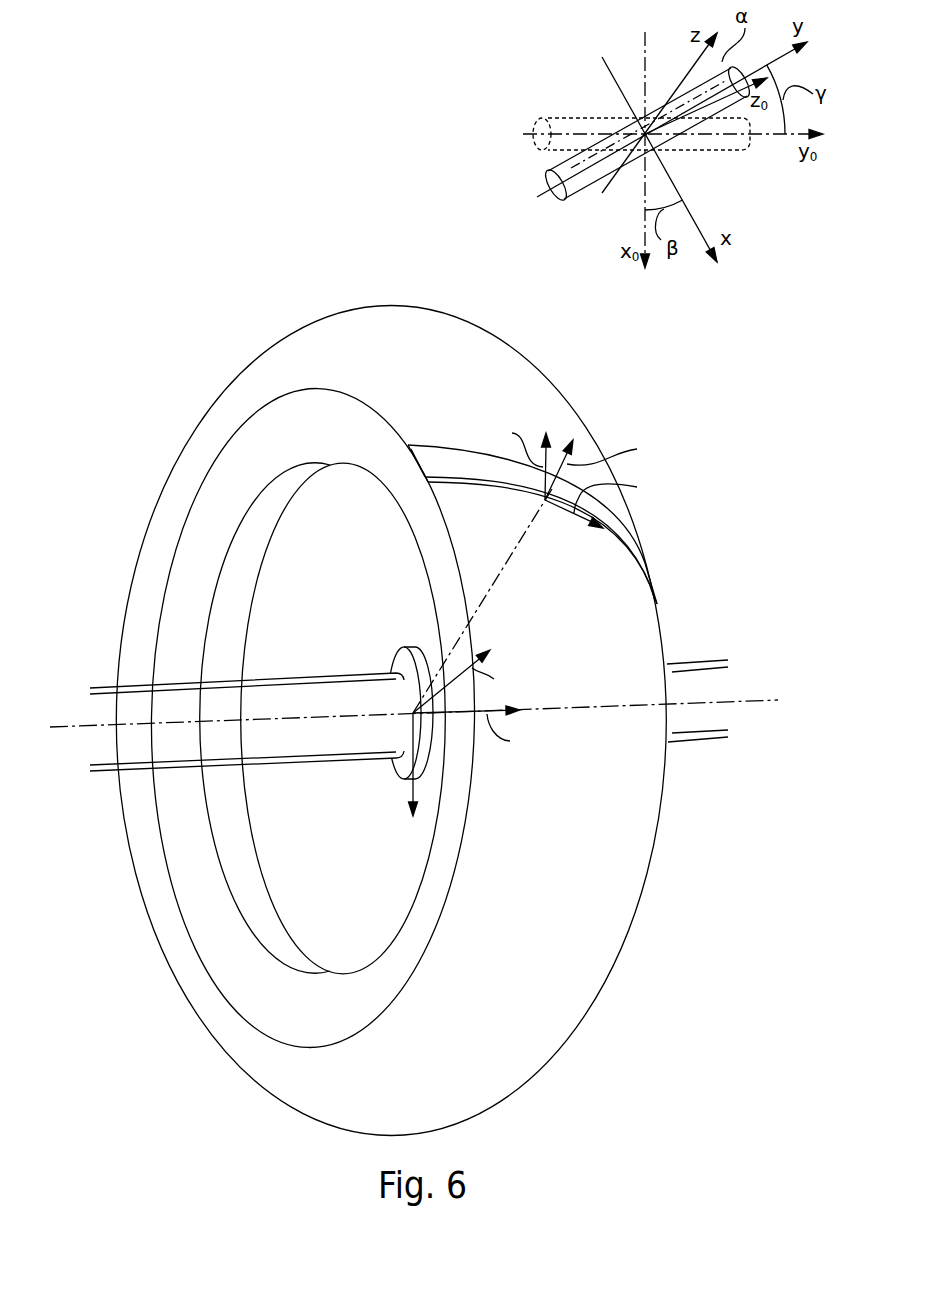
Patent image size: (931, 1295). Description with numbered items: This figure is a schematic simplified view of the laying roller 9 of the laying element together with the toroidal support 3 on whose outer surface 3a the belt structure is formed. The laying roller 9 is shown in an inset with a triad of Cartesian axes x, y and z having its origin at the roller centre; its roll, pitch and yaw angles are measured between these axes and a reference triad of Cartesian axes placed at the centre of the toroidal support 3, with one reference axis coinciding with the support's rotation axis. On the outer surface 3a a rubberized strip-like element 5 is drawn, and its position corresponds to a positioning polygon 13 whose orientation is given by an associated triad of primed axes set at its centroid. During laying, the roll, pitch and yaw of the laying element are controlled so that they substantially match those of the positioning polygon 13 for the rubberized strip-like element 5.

The toroidal support 3 is at (590, 408).
The outer surface 3a is at (573, 653).
The rubberized strip-like element 5 is at (620, 547).
The laying roller 9 is at (562, 197).
The positioning polygon 13 is at (541, 500).